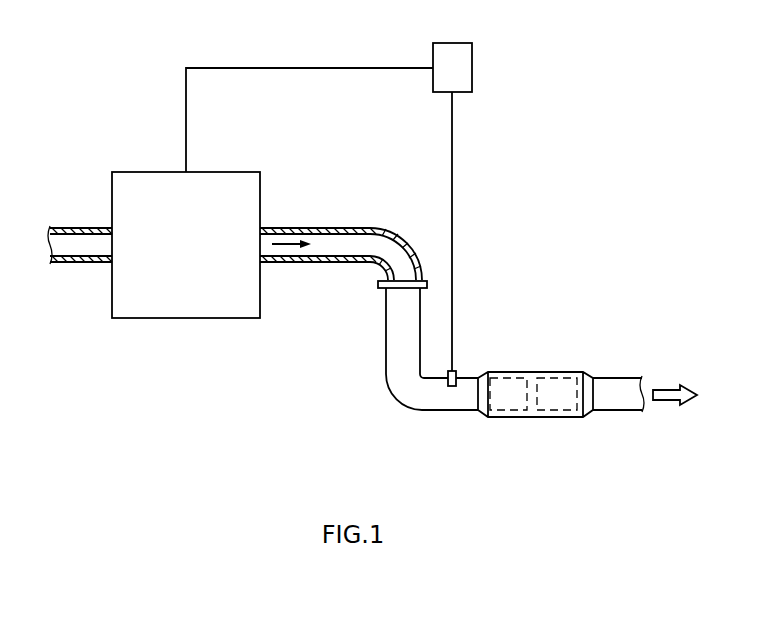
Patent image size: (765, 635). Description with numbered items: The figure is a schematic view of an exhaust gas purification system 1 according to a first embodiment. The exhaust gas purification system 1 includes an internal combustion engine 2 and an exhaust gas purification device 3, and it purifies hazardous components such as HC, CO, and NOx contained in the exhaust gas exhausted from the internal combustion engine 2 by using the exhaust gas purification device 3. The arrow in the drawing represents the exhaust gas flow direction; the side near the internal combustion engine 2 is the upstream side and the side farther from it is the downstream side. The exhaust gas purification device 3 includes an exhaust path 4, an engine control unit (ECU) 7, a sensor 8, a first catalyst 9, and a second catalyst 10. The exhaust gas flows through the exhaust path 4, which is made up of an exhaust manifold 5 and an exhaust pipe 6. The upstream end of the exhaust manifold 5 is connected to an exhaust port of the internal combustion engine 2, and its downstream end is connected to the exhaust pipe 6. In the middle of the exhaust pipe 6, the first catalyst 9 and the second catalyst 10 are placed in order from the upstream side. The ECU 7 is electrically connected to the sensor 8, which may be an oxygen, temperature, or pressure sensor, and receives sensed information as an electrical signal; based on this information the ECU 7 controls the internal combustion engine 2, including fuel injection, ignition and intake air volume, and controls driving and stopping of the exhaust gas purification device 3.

The exhaust gas purification system 1 is at (619, 65).
The internal combustion engine 2 is at (179, 327).
The exhaust gas purification device 3 is at (372, 316).
The exhaust path 4 is at (263, 318).
The exhaust manifold 5 is at (328, 266).
The exhaust pipe 6 is at (385, 329).
The engine control unit (ECU) 7 is at (473, 58).
The sensor 8 is at (452, 388).
The first catalyst 9 is at (508, 362).
The second catalyst 10 is at (555, 362).